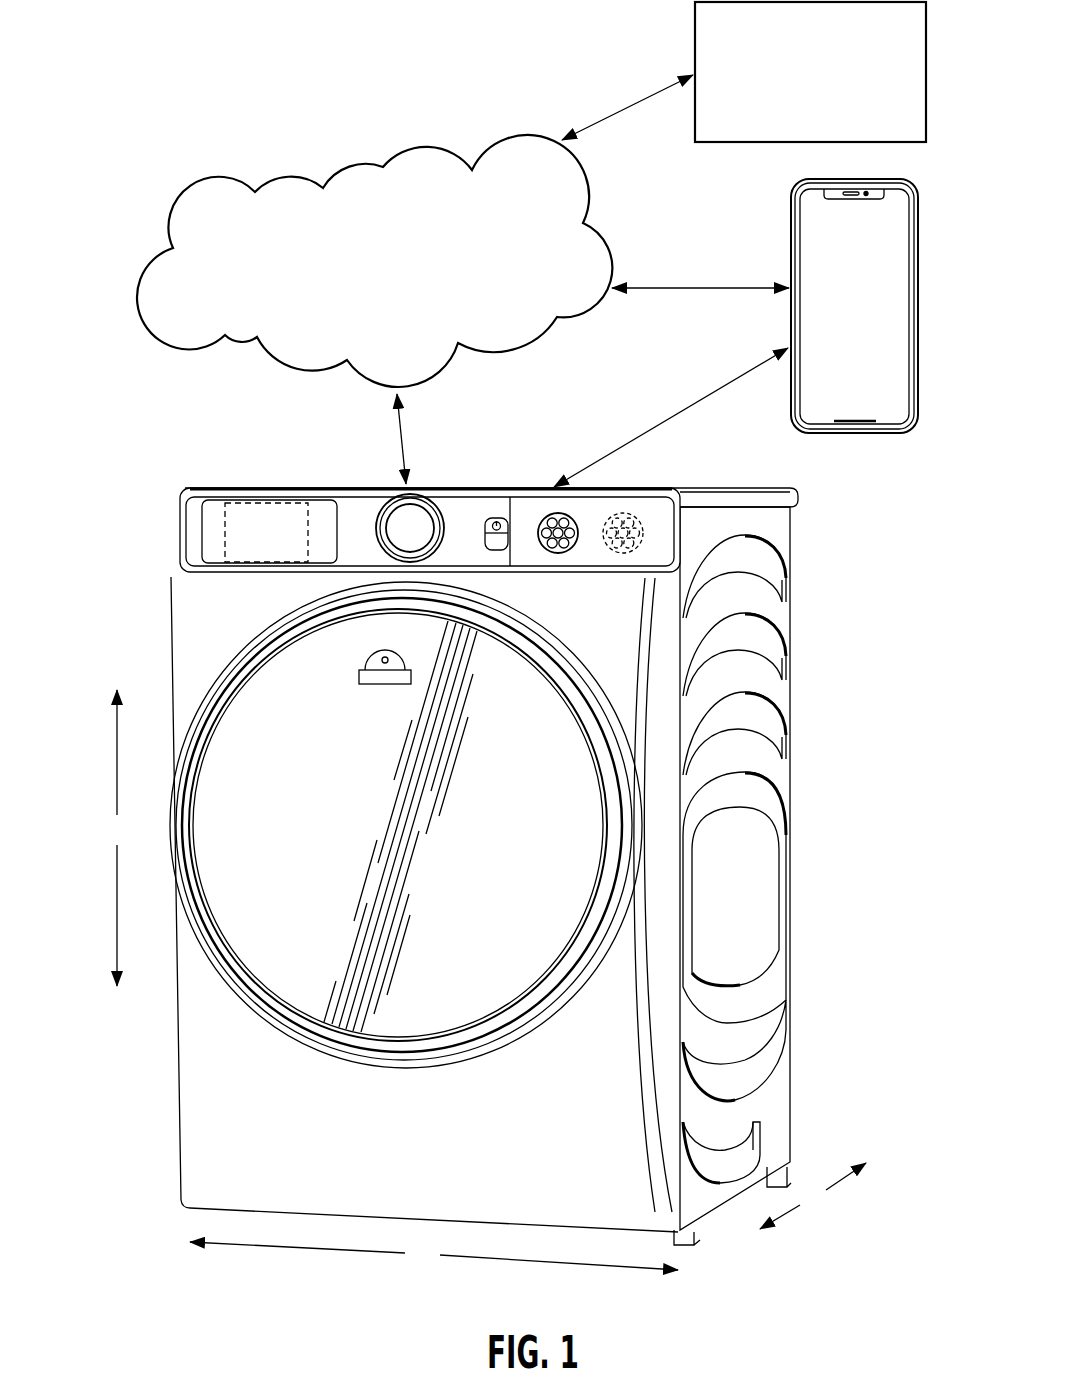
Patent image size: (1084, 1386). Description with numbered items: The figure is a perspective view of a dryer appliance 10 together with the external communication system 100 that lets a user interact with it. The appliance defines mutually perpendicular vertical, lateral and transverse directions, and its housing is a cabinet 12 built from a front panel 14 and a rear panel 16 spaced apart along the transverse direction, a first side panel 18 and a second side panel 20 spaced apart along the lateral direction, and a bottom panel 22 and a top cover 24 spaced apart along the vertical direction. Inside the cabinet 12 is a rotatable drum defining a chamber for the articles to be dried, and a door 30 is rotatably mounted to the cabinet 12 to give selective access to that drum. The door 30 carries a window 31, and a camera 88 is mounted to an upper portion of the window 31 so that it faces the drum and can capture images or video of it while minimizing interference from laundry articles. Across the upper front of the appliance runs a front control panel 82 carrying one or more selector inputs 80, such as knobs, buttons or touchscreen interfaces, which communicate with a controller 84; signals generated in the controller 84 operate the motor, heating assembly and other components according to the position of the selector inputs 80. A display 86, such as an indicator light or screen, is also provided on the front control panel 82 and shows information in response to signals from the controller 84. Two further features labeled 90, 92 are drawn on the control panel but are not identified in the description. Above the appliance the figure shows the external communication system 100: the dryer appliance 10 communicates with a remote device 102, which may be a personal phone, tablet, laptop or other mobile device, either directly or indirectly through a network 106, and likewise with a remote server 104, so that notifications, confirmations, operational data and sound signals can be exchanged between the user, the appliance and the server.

The dryer appliance 10 is at (123, 499).
The cabinet 12 is at (782, 769).
The front panel 14 is at (232, 1128).
The rear panel 16 is at (792, 982).
The first side panel 18 is at (172, 626).
The second side panel 20 is at (742, 903).
The bottom panel 22 is at (700, 1225).
The top cover 24 is at (753, 488).
The door 30 is at (281, 802).
The window 31 is at (538, 772).
The selector inputs 80 is at (423, 528).
The front control panel 82 is at (364, 519).
The controller 84 is at (231, 533).
The display 86 is at (320, 519).
The camera 88 is at (359, 678).
The speaker 90 is at (645, 540).
The microphone 92 is at (577, 522).
The external communication system 100 is at (334, 104).
The remote device 102 is at (837, 307).
The remote server 104 is at (790, 82).
The network 106 is at (362, 264).